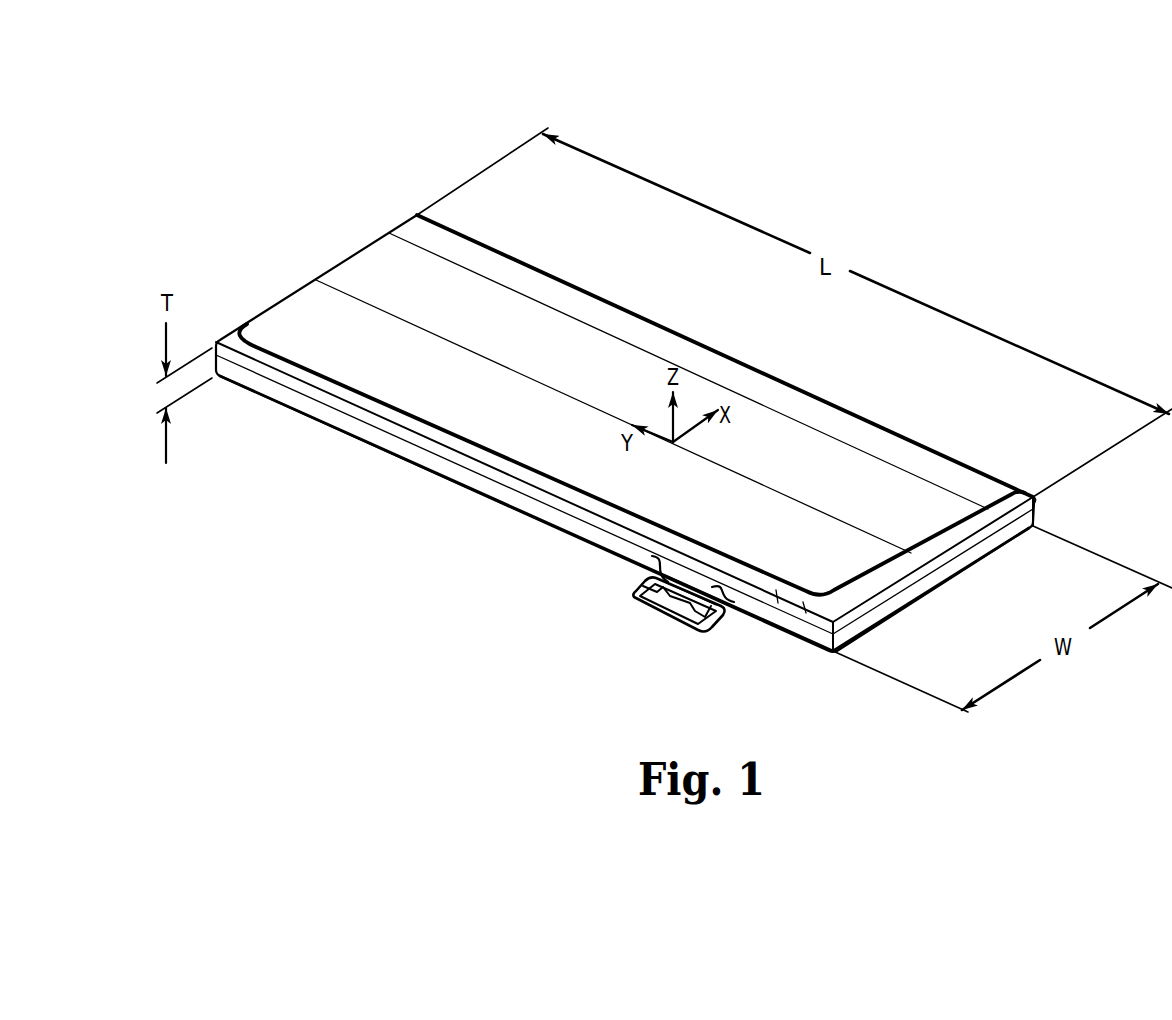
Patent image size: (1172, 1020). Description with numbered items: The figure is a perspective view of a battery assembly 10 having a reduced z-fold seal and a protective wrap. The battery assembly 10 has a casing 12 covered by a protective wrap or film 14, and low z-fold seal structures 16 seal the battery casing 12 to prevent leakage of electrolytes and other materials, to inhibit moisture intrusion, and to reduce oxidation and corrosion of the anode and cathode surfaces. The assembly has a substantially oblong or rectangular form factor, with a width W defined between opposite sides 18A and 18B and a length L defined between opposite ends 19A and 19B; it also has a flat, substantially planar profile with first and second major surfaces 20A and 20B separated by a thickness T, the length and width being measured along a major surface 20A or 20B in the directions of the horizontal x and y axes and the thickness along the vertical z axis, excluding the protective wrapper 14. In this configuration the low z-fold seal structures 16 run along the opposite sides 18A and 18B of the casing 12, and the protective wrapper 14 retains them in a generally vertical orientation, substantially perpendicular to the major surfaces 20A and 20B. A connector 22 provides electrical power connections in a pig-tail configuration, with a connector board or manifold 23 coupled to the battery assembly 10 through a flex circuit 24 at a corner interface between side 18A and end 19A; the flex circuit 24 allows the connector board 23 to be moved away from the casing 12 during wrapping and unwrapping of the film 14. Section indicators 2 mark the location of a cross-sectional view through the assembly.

The battery assembly 10 is at (678, 433).
The casing 12 is at (1010, 496).
The protective wrap or film 14 is at (297, 310).
The low z-fold seal structures 16 is at (1042, 515).
The first side 18A is at (338, 417).
The second side 18B is at (553, 273).
The first end 19A is at (936, 584).
The second end 19B is at (344, 255).
The first major surface 20A is at (407, 275).
The second major surface 20B is at (395, 465).
The connector 22 is at (668, 637).
The connector board or manifold 23 is at (637, 601).
The flex circuit 24 is at (763, 613).
The section line 2 is at (842, 323).